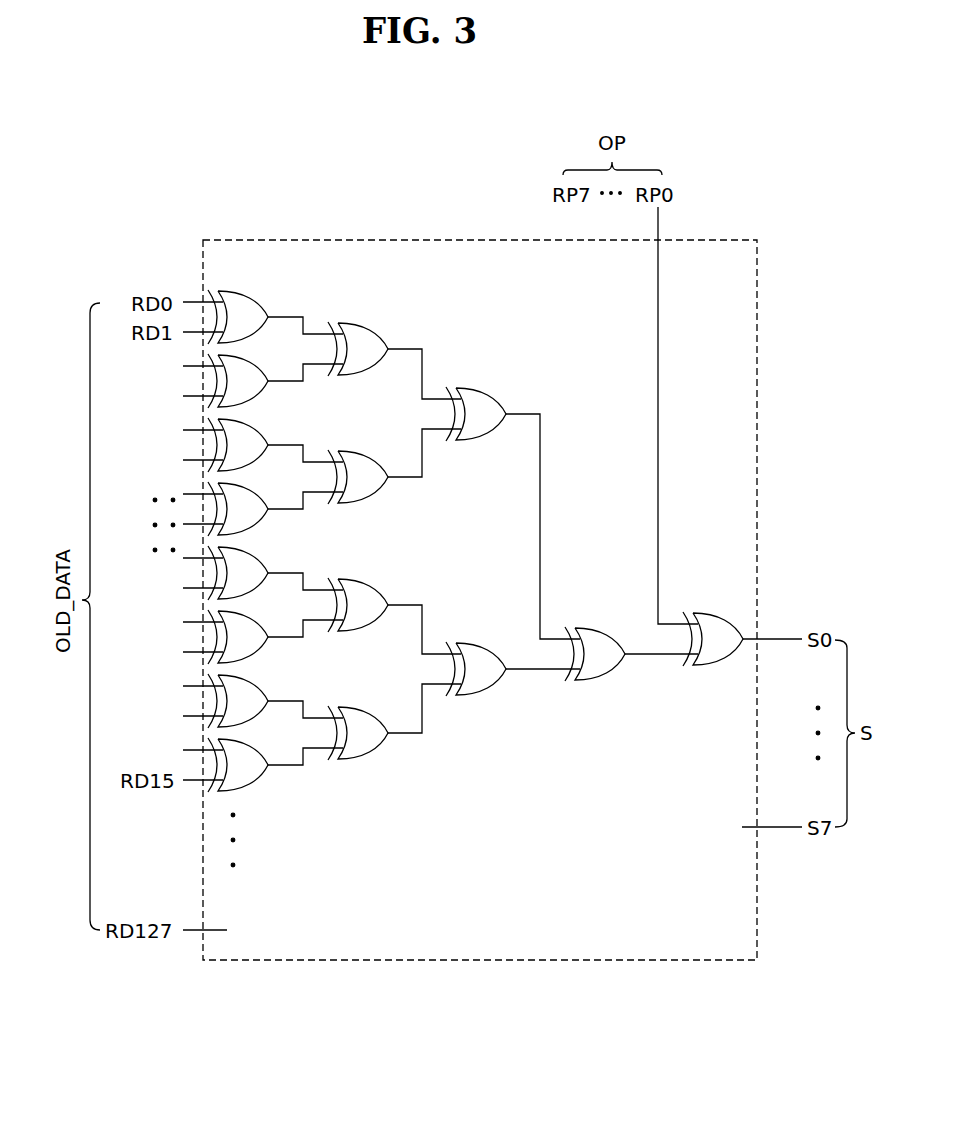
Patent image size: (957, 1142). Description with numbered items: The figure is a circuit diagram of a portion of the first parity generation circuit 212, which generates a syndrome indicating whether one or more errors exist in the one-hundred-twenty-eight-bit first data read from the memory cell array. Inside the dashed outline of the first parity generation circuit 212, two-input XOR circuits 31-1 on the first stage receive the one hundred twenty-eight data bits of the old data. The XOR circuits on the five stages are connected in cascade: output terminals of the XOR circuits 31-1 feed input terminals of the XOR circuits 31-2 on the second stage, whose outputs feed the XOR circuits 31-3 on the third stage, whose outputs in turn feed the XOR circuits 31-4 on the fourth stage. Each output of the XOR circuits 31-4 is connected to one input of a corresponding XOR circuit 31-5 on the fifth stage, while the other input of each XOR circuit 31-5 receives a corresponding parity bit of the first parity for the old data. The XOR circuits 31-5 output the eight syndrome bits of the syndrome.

The XOR circuits on a first stage 31-1 is at (240, 292).
The XOR circuits on a second stage 31-2 is at (358, 323).
The XOR circuits on a third stage 31-3 is at (477, 388).
The XOR circuits on a fourth stage 31-4 is at (589, 628).
The XOR circuits on a fifth stage 31-5 is at (707, 613).
The first parity generation circuit 212 is at (700, 240).